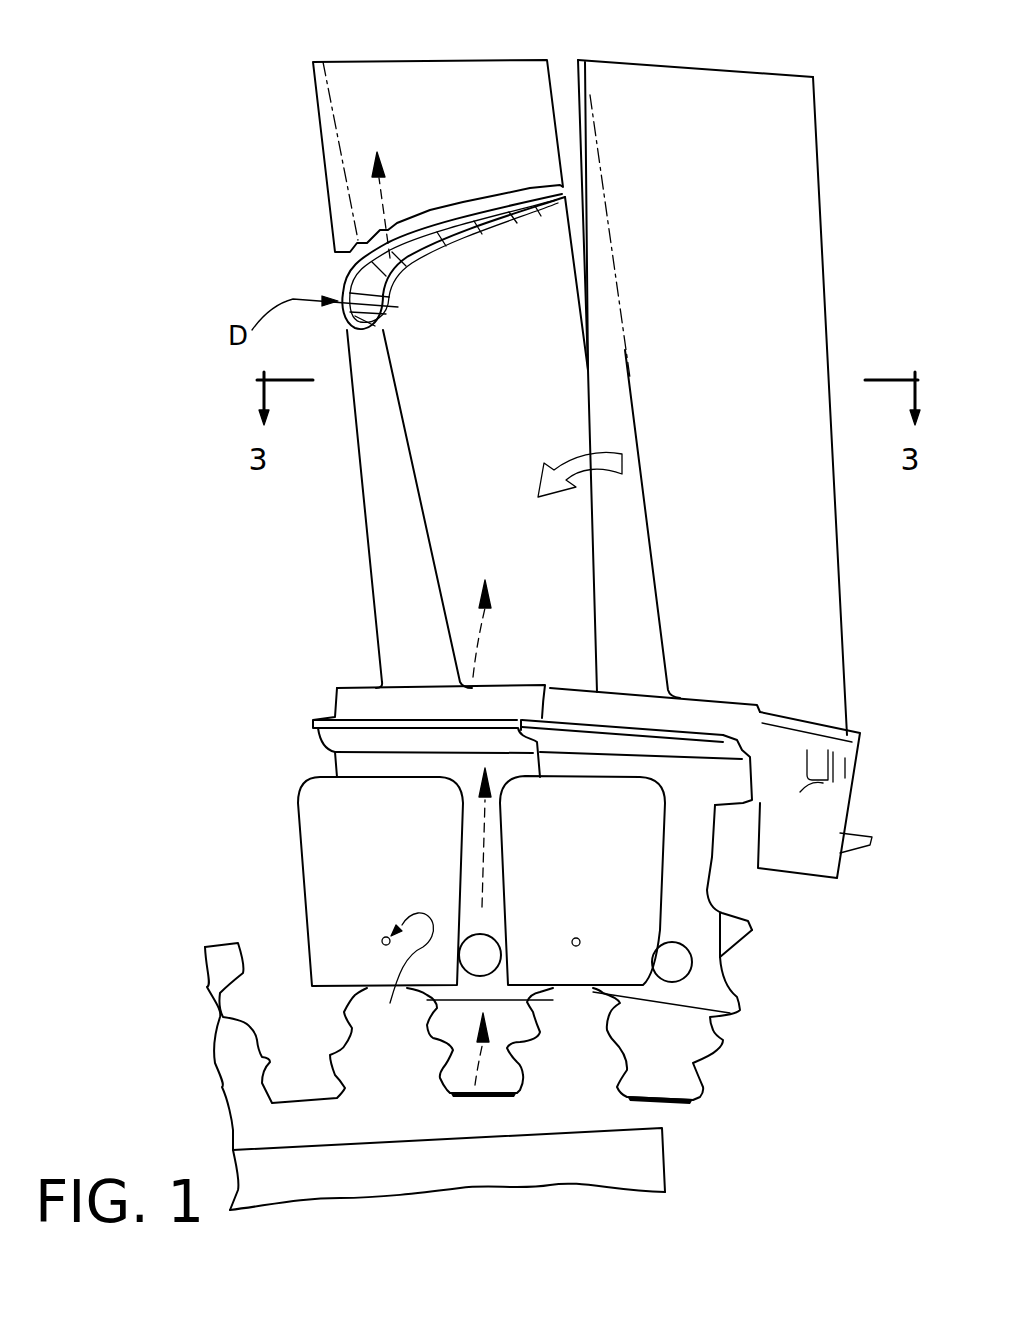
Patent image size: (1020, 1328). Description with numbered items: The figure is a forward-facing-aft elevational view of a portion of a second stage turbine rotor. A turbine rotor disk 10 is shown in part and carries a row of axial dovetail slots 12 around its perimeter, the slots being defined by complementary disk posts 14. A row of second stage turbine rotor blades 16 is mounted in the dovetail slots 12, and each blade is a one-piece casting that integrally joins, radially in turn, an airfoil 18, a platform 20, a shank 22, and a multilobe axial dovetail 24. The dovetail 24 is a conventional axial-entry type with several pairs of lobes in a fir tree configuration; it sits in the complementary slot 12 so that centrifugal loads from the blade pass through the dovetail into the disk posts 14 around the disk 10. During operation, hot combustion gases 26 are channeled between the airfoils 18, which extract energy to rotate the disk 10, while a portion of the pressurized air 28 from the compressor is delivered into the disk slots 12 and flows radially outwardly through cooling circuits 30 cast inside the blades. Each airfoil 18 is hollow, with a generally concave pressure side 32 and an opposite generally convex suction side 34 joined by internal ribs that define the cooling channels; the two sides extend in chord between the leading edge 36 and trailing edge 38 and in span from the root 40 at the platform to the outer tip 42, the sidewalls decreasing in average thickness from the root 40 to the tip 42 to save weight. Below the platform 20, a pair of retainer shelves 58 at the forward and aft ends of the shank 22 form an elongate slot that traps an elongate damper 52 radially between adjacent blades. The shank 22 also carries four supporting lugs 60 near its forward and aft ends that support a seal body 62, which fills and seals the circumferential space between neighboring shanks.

The turbine rotor disk 10 is at (668, 1150).
The axial dovetail slot 12 is at (286, 1023).
The disk post 14 is at (569, 1051).
The second stage turbine rotor blade 16 is at (826, 103).
The airfoil 18 is at (375, 563).
The platform 20 is at (340, 688).
The shank 22 is at (742, 885).
The multilobe axial dovetail 24 is at (725, 1040).
The hot combustion gases 26 is at (578, 465).
The pressurized air 28 is at (463, 1097).
The cooling circuit 30 is at (352, 278).
The pressure side 32 is at (673, 312).
The suction side 34 is at (624, 555).
The leading edge 36 is at (664, 608).
The trailing edge 38 is at (848, 634).
The root 40 is at (730, 700).
The tip 42 is at (650, 62).
The damper 52 is at (833, 743).
The retainer shelf 58 is at (765, 757).
The supporting lug 60 is at (737, 943).
The seal body 62 is at (582, 880).